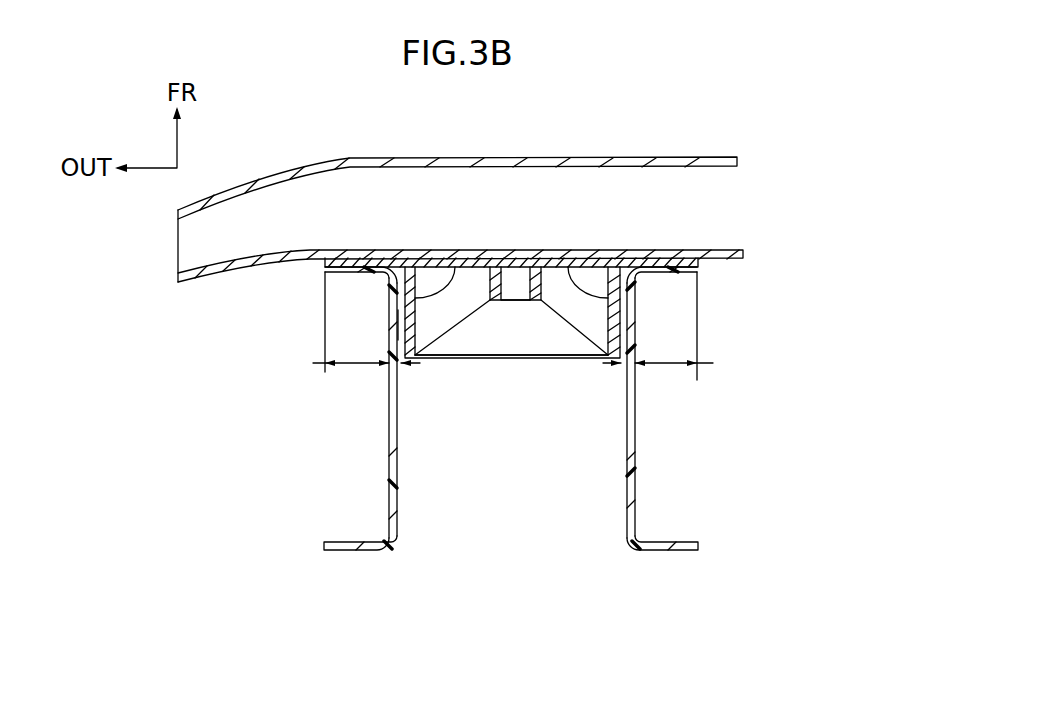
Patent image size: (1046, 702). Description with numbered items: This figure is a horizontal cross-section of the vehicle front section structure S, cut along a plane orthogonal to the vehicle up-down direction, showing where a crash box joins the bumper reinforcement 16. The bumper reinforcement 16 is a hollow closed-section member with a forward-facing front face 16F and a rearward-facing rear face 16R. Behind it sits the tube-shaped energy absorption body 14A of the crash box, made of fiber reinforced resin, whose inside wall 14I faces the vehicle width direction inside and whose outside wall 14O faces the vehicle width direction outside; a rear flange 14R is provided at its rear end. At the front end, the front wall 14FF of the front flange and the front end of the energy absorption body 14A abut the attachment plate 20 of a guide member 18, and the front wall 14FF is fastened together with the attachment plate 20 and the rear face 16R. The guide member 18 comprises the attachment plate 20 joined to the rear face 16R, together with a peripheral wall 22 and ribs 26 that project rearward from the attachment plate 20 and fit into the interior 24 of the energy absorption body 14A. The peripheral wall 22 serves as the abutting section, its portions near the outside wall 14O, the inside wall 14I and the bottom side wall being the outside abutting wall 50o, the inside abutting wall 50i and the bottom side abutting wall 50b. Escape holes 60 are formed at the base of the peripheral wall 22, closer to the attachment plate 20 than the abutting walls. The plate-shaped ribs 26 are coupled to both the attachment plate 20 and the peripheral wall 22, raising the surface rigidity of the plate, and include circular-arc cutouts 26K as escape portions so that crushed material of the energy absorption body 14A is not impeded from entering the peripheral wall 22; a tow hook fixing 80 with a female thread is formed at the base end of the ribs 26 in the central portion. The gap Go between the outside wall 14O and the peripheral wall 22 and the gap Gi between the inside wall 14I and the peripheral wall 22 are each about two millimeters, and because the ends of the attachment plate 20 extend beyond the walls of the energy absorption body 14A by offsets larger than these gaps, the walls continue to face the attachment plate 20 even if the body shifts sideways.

The vehicle front section structure S is at (702, 108).
The bumper reinforcement 16 is at (460, 175).
The front face 16F is at (470, 156).
The rear face 16R is at (508, 250).
The energy absorption body 14A is at (567, 429).
The front wall 14FF is at (668, 276).
The outside wall 14O is at (397, 508).
The inside wall 14I is at (625, 510).
The rear flange 14R is at (705, 546).
The attachment plate 20 is at (518, 306).
The ribs 26 is at (449, 357).
The cutouts 26K is at (421, 282).
The tow hook fixing 80 is at (502, 290).
The guide member 18 is at (525, 306).
The outside abutting wall 50o is at (420, 357).
The inside abutting wall 50i is at (604, 353).
The bottom side abutting wall 50b is at (535, 357).
The escape holes 60 is at (424, 261).
The peripheral wall 22 is at (398, 325).
The interior 24 is at (520, 456).
The gap Go is at (400, 368).
The gap Gi is at (621, 365).